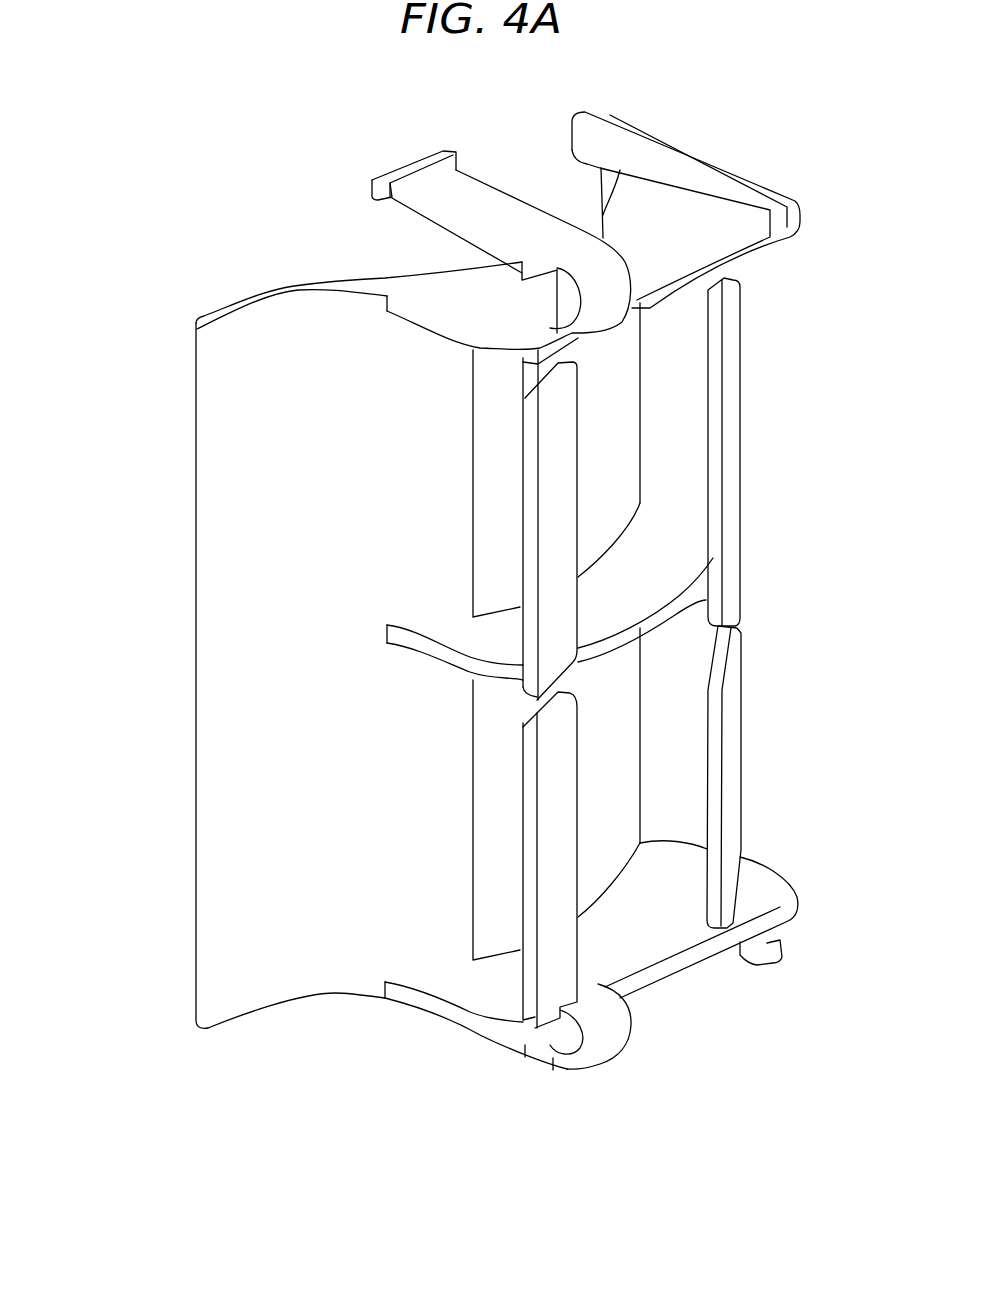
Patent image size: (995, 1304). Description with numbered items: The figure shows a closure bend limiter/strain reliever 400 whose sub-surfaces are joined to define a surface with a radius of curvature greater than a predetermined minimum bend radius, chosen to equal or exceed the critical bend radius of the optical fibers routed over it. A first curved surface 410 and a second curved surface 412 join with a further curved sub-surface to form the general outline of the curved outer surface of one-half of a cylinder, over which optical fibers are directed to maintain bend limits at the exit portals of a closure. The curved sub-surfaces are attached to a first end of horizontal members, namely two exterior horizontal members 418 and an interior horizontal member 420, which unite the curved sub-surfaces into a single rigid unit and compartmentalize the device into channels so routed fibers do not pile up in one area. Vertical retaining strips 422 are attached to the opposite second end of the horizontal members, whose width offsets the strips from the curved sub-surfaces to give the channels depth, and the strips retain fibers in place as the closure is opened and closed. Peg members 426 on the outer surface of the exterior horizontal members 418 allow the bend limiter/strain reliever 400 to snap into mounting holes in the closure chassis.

The bend limiter/strain reliever 400 is at (164, 238).
The first curved surface 410 is at (227, 403).
The second curved surface 412 is at (607, 818).
The exterior horizontal member 418 is at (621, 226).
The interior horizontal member 420 is at (677, 517).
The vertical retaining strip 422 is at (732, 403).
The peg member 426 is at (447, 208).